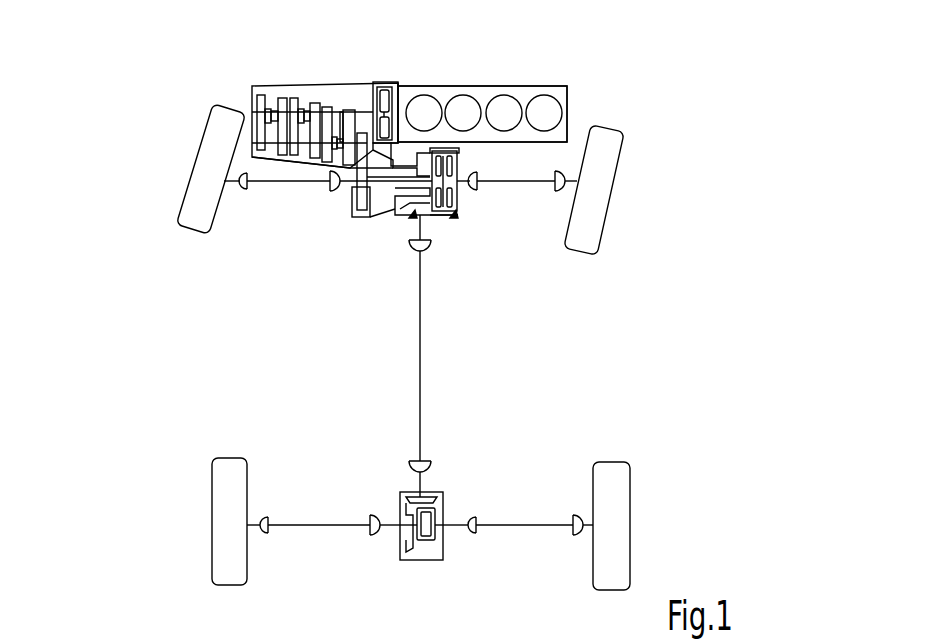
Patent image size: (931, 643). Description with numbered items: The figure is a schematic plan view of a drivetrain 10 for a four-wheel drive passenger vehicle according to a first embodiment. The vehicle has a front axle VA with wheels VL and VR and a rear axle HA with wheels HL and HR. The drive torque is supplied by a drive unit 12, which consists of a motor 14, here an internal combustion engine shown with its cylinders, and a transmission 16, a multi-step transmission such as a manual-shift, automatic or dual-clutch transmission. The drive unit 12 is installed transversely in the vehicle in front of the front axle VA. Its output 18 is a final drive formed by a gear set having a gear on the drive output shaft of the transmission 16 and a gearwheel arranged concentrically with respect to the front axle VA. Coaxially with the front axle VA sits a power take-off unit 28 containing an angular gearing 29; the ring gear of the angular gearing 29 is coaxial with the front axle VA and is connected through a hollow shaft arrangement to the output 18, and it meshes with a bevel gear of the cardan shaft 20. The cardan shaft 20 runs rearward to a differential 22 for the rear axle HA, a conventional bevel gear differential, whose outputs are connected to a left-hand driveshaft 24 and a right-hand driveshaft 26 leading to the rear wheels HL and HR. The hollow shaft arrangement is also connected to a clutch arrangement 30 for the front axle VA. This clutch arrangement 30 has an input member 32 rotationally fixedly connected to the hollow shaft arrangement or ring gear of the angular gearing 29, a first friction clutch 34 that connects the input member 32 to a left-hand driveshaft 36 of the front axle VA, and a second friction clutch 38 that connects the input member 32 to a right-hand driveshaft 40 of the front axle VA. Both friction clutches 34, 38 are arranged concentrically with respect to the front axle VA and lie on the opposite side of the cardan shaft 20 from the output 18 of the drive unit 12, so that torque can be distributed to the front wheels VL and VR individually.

The drivetrain 10 is at (690, 81).
The drive unit 12 is at (434, 82).
The motor 14 is at (533, 97).
The transmission 16 is at (323, 97).
The output 18 is at (352, 207).
The cardan shaft 20 is at (420, 397).
The differential 22 is at (430, 553).
The left-hand driveshaft 24 is at (306, 525).
The right-hand driveshaft 26 is at (541, 528).
The power take-off unit 28 is at (400, 213).
The angular gearing 29 is at (408, 222).
The clutch arrangement 30 is at (455, 220).
The input member 32 is at (445, 157).
The first friction clutch 34 is at (438, 218).
The left-hand driveshaft 36 is at (262, 196).
The second friction clutch 38 is at (458, 170).
The right-hand driveshaft 40 is at (524, 184).
The front left wheel VL is at (213, 142).
The front right wheel VR is at (593, 232).
The rear left wheel HL is at (212, 567).
The rear right wheel HR is at (622, 565).
The front axle VA is at (166, 152).
The rear axle HA is at (208, 490).